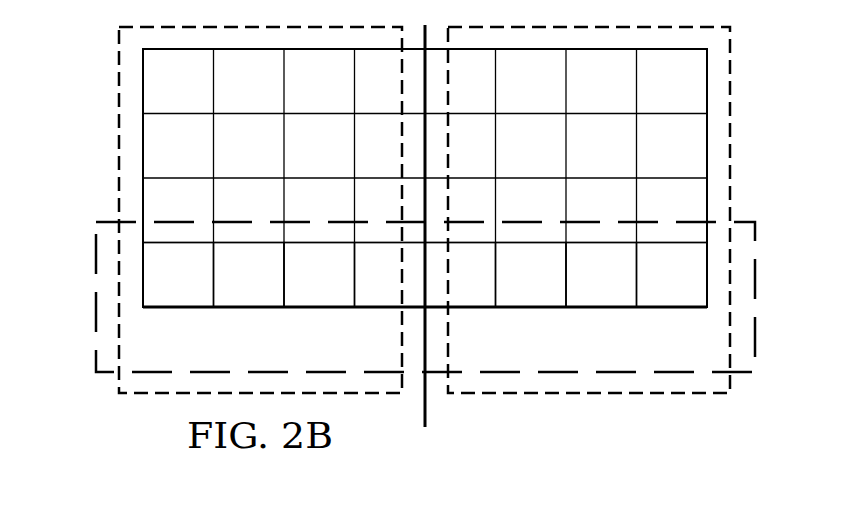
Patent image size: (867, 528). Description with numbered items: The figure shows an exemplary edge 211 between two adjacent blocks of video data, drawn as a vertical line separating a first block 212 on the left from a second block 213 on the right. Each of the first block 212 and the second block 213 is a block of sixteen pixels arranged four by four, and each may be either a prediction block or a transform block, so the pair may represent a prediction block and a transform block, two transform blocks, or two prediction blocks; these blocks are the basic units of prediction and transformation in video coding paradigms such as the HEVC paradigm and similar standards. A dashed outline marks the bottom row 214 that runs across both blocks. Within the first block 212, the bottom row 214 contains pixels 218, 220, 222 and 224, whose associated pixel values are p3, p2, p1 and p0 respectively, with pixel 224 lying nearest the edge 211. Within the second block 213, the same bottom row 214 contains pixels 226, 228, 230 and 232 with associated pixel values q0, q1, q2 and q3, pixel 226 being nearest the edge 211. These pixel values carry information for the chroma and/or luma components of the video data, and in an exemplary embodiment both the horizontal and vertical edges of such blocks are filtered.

The edge 211 is at (434, 408).
The first block 212 is at (114, 155).
The second block 213 is at (736, 155).
The bottom row 214 is at (90, 283).
The pixel 218 is at (177, 297).
The pixel 220 is at (248, 297).
The pixel 222 is at (318, 297).
The pixel 224 is at (378, 297).
The pixel 226 is at (473, 297).
The pixel 228 is at (532, 297).
The pixel 230 is at (603, 297).
The pixel 232 is at (675, 297).